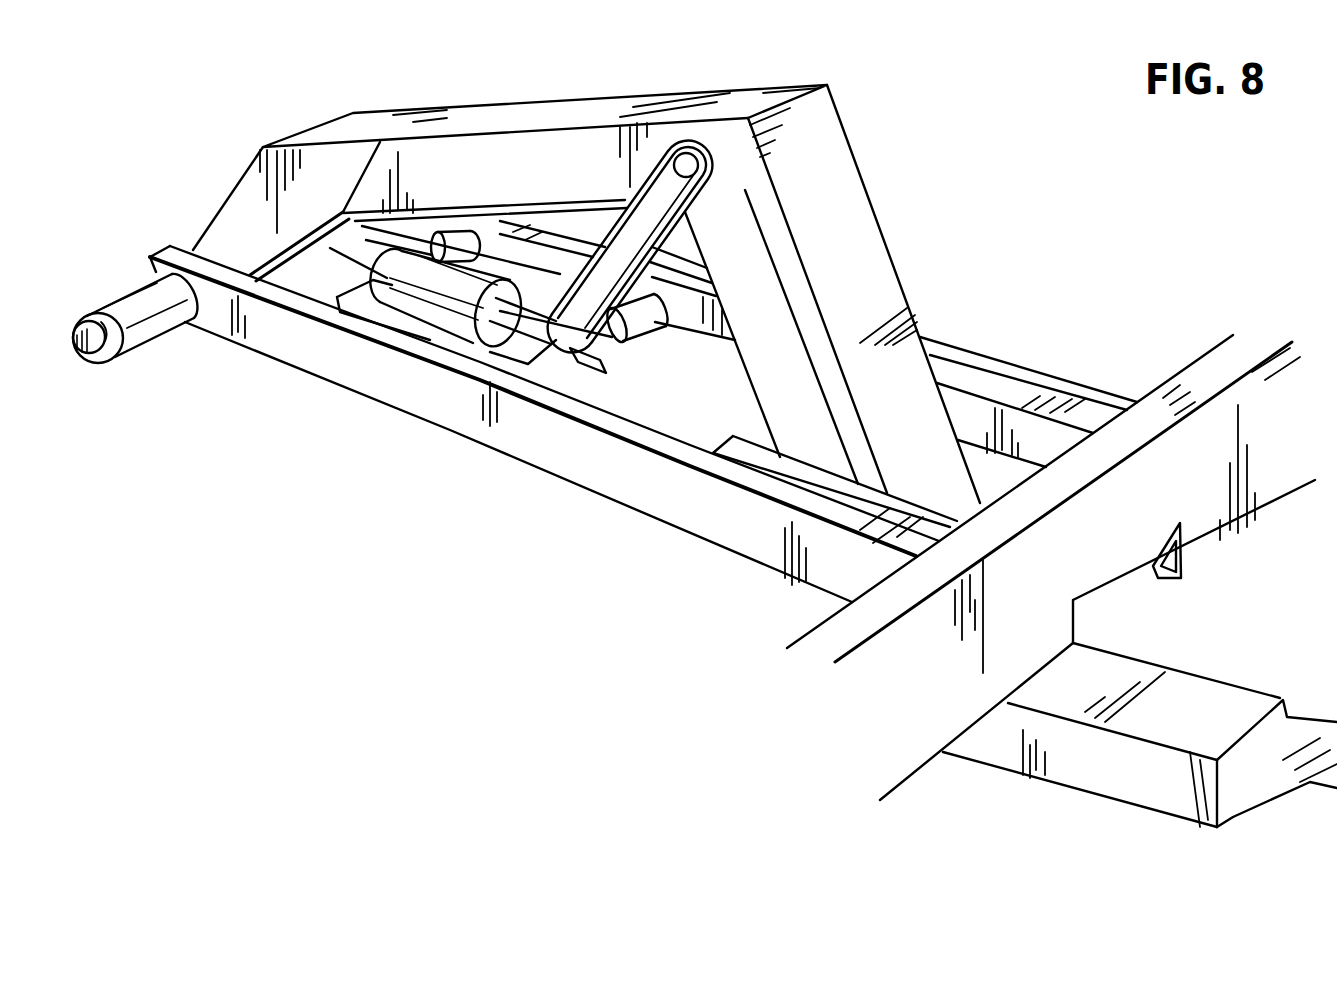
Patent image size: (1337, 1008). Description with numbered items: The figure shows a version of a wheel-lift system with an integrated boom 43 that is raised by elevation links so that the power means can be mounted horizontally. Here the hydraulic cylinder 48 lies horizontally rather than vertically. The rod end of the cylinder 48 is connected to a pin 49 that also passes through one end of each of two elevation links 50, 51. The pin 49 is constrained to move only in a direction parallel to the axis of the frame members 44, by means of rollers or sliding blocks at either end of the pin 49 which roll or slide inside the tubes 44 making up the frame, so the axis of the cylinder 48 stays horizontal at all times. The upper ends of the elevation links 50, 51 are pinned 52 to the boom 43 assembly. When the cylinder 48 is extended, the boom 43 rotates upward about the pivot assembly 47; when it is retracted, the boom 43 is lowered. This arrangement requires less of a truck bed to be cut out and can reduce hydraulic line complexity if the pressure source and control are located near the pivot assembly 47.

The boom 43 is at (487, 120).
The frame members 44 is at (281, 340).
The pivot assembly 47 is at (130, 308).
The hydraulic cylinder 48 is at (443, 310).
The pin 49 is at (578, 372).
The elevation link 50 is at (598, 373).
The elevation link 51 is at (603, 368).
The pin 52 is at (727, 223).